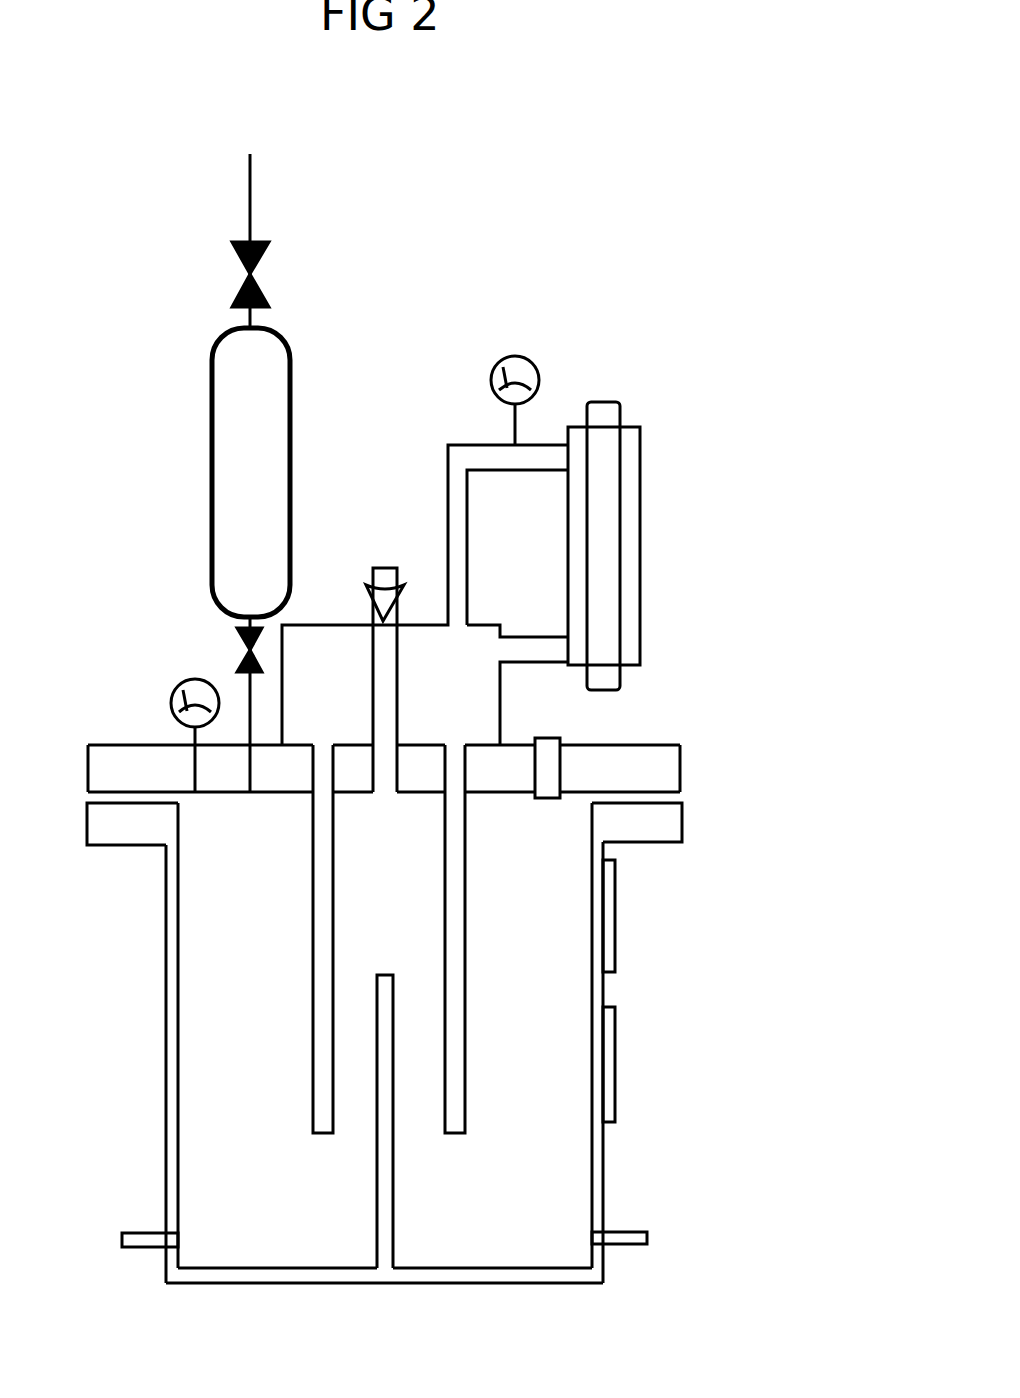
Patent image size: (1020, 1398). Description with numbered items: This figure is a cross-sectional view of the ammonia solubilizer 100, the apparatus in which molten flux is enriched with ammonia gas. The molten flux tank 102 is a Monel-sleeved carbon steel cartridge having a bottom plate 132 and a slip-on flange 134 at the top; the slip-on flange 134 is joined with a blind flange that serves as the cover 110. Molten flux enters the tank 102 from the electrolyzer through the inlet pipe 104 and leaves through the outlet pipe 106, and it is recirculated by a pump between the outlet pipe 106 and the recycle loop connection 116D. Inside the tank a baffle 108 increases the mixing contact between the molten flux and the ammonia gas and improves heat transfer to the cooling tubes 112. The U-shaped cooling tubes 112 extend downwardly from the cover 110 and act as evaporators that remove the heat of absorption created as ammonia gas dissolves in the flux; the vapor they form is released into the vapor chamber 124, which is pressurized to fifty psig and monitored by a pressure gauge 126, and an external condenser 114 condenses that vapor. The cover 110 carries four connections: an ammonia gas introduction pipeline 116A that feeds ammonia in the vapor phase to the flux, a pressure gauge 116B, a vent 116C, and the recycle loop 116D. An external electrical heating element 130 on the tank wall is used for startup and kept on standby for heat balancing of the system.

The ammonia solubilizer 100 is at (462, 779).
The molten flux tank 102 is at (607, 1205).
The inlet pipe 104 is at (637, 1251).
The outlet pipe 106 is at (144, 1252).
The baffle 108 is at (406, 1107).
The cover 110 is at (384, 768).
The cooling tubes 112 is at (308, 1088).
The external condenser 114 is at (642, 526).
The ammonia gas introduction pipeline 116A is at (261, 473).
The pressure gauge 116B is at (227, 752).
The vent 116C is at (547, 781).
The recycle loop 116D is at (385, 680).
The vapor chamber 124 is at (425, 595).
The pressure gauge 126 is at (541, 398).
The external electrical heating element 130 is at (618, 927).
The bottom plate 132 is at (384, 1290).
The slip-on flange 134 is at (410, 824).